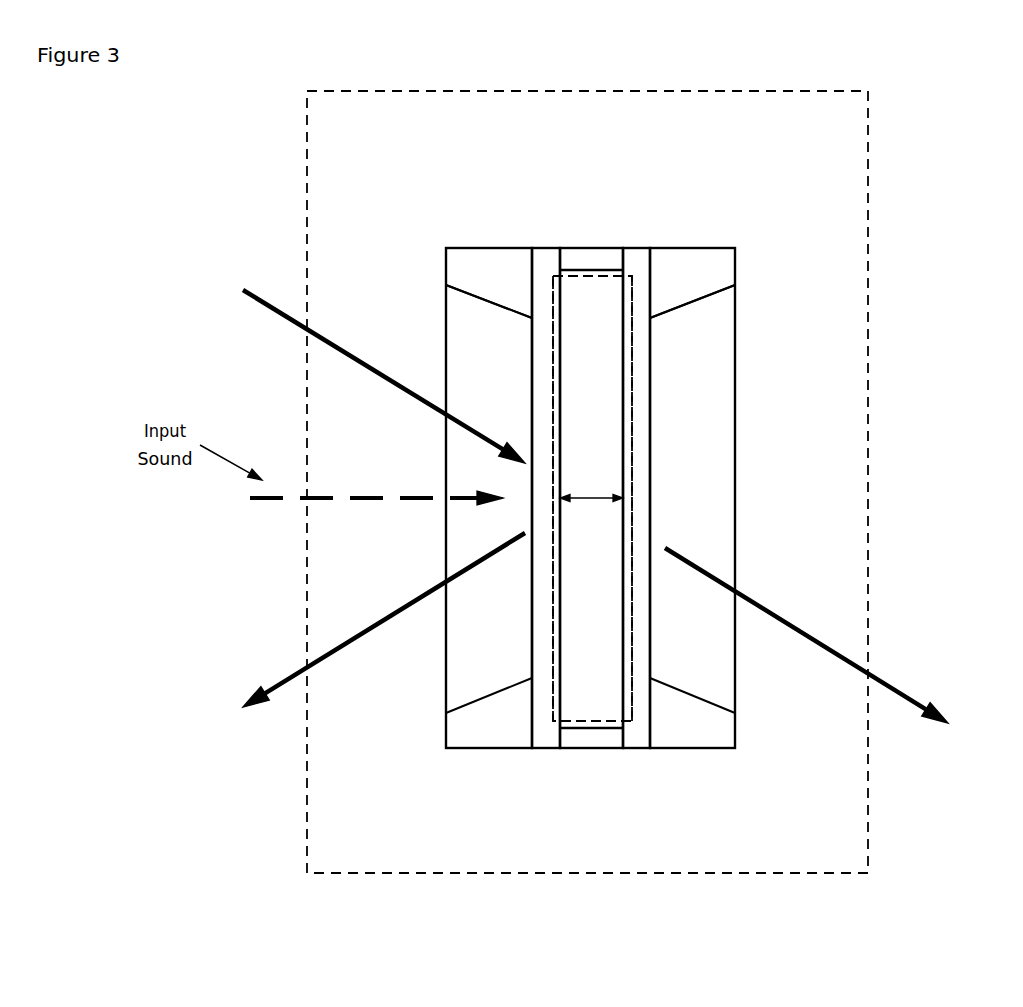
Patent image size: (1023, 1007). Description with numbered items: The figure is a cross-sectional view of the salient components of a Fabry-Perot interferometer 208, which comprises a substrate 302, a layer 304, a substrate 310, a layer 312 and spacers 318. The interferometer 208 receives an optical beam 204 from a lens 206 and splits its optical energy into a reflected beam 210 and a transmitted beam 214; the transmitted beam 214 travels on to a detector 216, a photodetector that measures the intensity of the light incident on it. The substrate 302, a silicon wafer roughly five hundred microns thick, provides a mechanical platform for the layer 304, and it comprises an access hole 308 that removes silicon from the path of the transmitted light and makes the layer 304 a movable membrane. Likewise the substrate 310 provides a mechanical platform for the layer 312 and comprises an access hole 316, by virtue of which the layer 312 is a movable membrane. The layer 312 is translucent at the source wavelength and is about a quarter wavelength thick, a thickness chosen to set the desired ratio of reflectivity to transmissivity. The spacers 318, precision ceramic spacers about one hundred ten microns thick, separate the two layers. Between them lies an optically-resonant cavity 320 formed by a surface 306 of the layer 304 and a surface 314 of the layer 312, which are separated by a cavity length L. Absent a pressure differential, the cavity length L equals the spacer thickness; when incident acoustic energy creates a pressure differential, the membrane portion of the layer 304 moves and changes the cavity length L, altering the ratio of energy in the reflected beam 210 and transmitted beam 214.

The Fabry-Perot interferometer 208 is at (577, 122).
The substrate 302 is at (692, 281).
The layer 304 is at (675, 479).
The surface 306 is at (677, 498).
The access hole 308 is at (744, 293).
The substrate 310 is at (489, 281).
The layer 312 is at (510, 479).
The surface 314 is at (508, 498).
The access hole 316 is at (438, 294).
The spacers 318 is at (644, 499).
The optically-resonant cavity 320 is at (545, 498).
The cavity length L is at (634, 452).
The optical beam 204 is at (342, 376).
The reflected beam 210 is at (343, 620).
The transmitted beam 214 is at (806, 635).
The lens 206 is at (218, 483).
The detector 216 is at (975, 752).